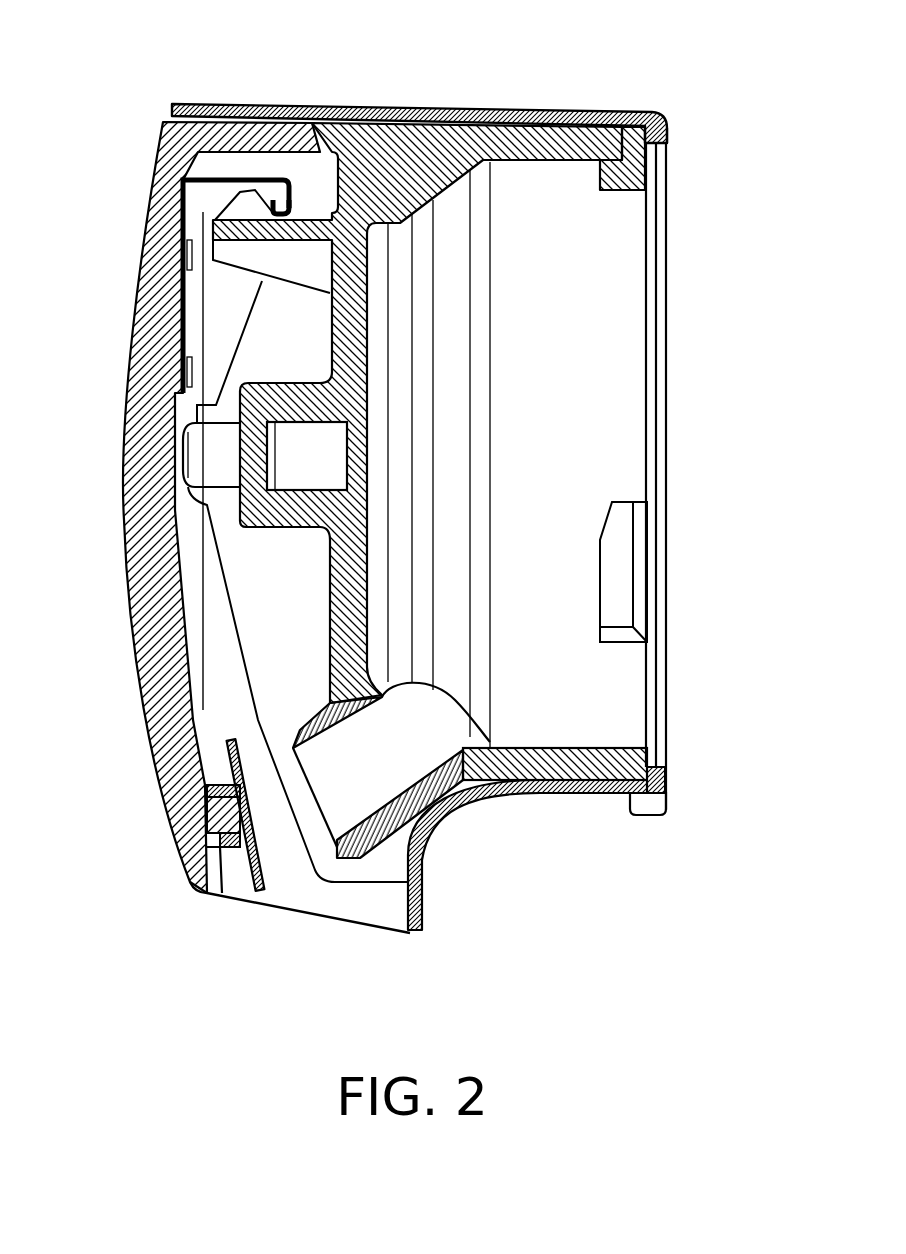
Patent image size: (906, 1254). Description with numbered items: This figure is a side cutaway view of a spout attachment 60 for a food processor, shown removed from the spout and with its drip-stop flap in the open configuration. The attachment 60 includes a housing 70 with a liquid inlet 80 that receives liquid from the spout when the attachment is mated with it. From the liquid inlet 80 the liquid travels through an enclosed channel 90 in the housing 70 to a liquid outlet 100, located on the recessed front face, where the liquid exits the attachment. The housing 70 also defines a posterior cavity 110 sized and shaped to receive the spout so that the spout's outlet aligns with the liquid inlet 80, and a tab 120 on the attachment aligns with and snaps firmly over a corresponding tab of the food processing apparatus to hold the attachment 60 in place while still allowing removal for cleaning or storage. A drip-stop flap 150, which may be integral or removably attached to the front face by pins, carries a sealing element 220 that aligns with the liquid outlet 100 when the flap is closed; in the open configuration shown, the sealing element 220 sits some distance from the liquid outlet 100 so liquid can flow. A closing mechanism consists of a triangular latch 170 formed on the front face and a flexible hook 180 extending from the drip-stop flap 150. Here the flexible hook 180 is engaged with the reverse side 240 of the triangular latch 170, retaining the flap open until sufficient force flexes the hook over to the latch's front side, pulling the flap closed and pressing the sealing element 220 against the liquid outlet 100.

The spout attachment 60 is at (703, 123).
The housing 70 is at (427, 103).
The liquid inlet 80 is at (440, 713).
The enclosed channel 90 is at (433, 813).
The liquid outlet 100 is at (358, 843).
The posterior cavity 110 is at (578, 390).
The tab 120 is at (625, 127).
The drip-stop flap 150 is at (172, 688).
The triangular latch 170 is at (232, 246).
The flexible hook 180 is at (295, 203).
The sealing element 220 is at (263, 868).
The reverse side 240 is at (287, 182).